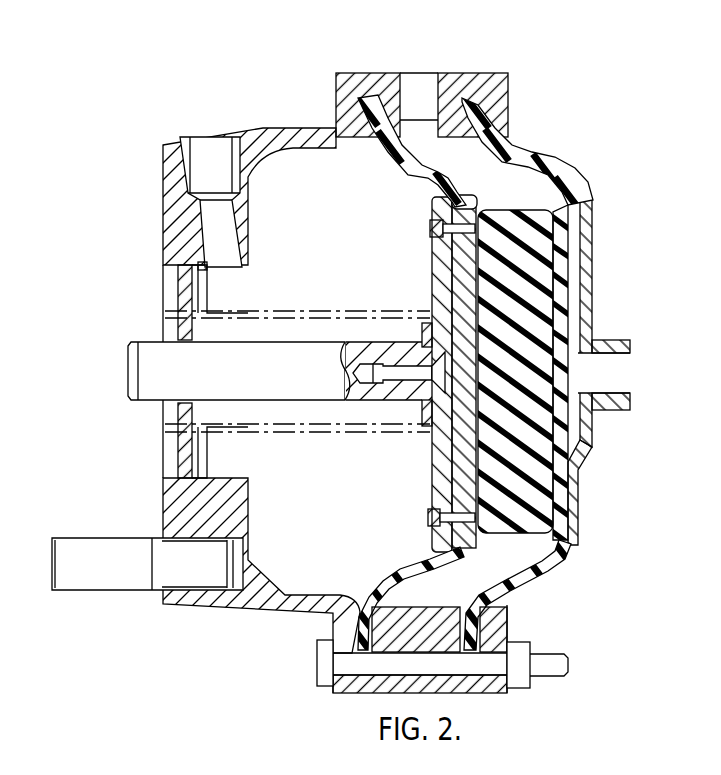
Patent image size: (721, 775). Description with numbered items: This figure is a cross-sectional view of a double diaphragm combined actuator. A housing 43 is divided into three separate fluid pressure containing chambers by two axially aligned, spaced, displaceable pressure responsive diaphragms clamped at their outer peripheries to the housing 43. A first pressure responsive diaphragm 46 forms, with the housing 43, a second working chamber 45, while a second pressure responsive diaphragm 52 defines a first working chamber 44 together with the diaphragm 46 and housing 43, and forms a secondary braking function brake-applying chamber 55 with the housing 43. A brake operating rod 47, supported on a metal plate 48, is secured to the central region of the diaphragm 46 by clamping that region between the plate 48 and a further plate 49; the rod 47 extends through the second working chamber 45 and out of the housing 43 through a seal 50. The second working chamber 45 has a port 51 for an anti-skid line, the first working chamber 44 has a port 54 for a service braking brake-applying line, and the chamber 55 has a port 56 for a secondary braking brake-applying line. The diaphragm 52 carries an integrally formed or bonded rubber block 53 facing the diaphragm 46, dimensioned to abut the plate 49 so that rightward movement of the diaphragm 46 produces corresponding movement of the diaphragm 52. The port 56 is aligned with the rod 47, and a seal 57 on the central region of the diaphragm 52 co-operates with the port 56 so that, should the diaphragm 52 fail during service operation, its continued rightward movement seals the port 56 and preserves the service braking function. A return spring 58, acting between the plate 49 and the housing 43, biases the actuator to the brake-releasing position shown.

The housing 43 is at (283, 148).
The first working chamber 44 is at (505, 180).
The second working chamber 45 is at (328, 173).
The first pressure responsive diaphragm 46 is at (432, 178).
The brake operating rod 47 is at (300, 357).
The metal plate 48 is at (438, 292).
The further plate 49 is at (463, 203).
The seal 50 is at (176, 413).
The port 51 is at (207, 157).
The second pressure responsive diaphragm 52 is at (557, 222).
The block 53 is at (562, 547).
The port 54 is at (410, 92).
The secondary braking function brake-applying chamber 55 is at (572, 307).
The port 56 is at (627, 412).
The seal 57 is at (578, 457).
The return spring 58 is at (287, 427).